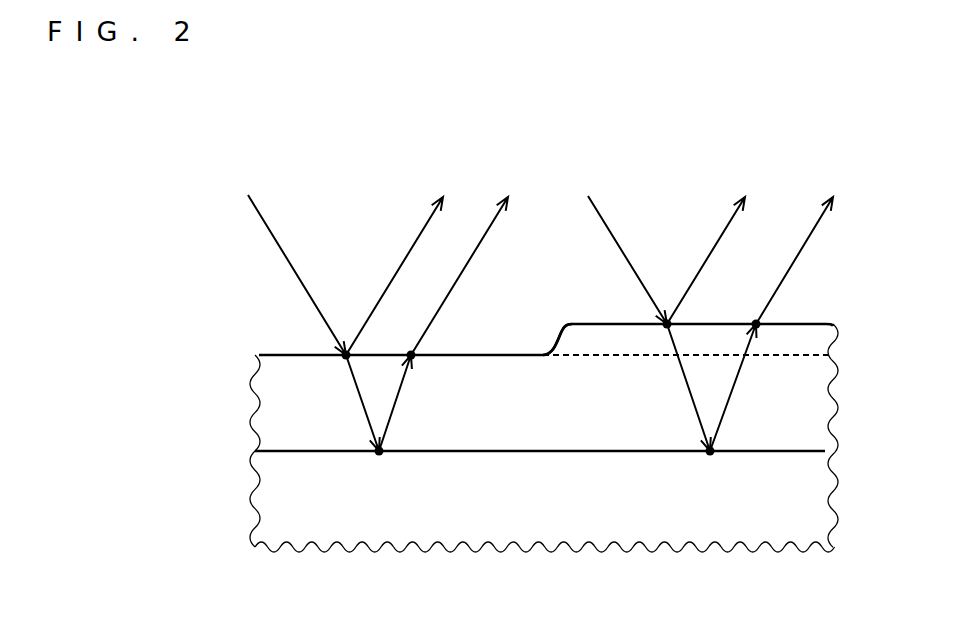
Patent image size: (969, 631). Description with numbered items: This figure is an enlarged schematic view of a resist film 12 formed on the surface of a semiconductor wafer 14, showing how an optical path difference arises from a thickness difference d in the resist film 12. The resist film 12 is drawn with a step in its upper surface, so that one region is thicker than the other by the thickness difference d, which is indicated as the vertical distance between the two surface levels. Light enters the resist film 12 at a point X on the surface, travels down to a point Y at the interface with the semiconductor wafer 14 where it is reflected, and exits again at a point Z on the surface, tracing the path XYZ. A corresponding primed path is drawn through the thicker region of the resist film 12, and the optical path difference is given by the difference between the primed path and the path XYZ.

The resist film 12 is at (808, 407).
The semiconductor wafer 14 is at (808, 512).
The thickness difference d is at (589, 326).
The incidence point X is at (499, 341).
The reflection point Y is at (559, 465).
The exit point Z is at (602, 341).